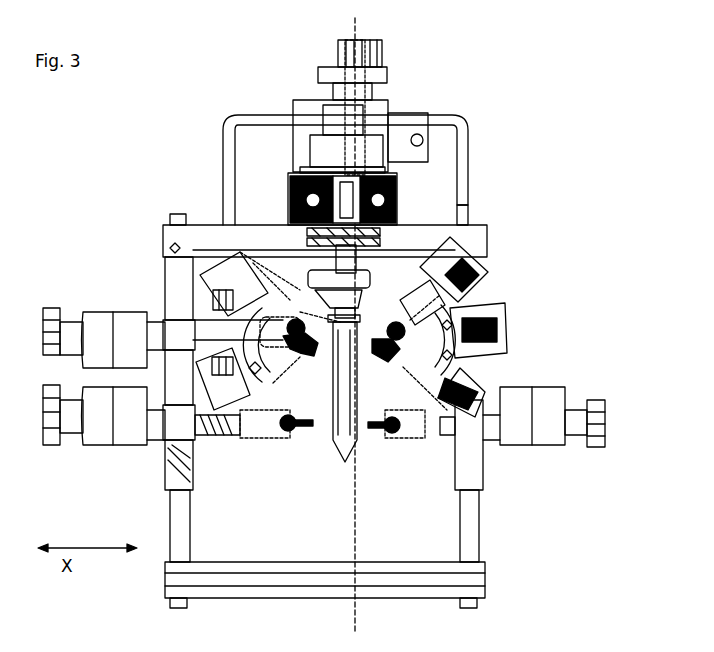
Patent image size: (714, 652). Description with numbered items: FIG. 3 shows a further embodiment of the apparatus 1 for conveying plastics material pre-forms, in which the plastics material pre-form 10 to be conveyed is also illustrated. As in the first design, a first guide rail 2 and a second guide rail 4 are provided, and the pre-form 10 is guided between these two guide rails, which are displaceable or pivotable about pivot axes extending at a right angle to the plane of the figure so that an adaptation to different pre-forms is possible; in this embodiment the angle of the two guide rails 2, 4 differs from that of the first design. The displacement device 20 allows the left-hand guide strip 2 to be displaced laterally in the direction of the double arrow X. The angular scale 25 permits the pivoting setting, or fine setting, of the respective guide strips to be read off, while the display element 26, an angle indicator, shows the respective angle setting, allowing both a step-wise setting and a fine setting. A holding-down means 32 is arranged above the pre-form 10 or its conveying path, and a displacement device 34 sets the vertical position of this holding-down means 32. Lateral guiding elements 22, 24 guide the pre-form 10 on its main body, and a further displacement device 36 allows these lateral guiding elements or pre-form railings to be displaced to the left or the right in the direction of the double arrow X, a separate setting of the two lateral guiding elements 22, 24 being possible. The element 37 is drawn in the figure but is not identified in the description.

The apparatus 1 is at (520, 158).
The first guide rail 2 is at (292, 362).
The second guide rail 4 is at (382, 366).
The plastics material pre-form 10 is at (343, 417).
The displacement device 20 is at (98, 328).
The lateral guiding element 22 is at (282, 427).
The lateral guiding element 24 is at (369, 428).
The angular scale 25 is at (452, 258).
The display element 26 is at (422, 298).
The holding-down means 32 is at (319, 344).
The displacement device 34 is at (343, 117).
The further displacement device 36 is at (106, 430).
The adjusting knob 37 is at (545, 392).